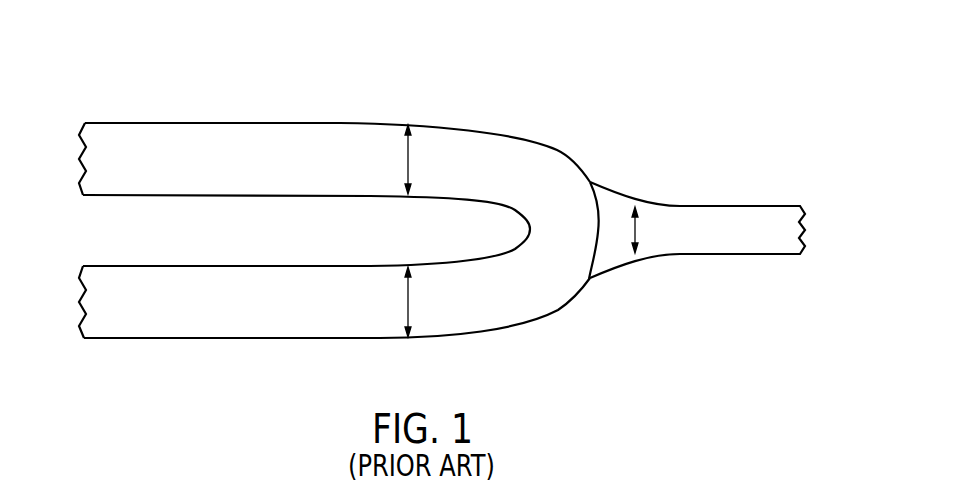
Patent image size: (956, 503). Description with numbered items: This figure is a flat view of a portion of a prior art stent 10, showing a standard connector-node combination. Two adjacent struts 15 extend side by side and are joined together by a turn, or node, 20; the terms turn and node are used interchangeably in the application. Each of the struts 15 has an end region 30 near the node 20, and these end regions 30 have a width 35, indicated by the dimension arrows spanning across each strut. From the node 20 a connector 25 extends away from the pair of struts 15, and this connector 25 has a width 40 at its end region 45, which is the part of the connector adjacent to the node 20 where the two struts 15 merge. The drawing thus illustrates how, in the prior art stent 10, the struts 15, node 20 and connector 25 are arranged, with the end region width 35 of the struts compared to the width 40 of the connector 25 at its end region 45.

The portion of a stent 10 is at (722, 100).
The struts 15 is at (157, 152).
The turn or node 20 is at (563, 243).
The connector 25 is at (767, 228).
The end regions 30 is at (473, 165).
The width 35 is at (405, 160).
The width 40 is at (638, 228).
The end region 45 is at (613, 212).